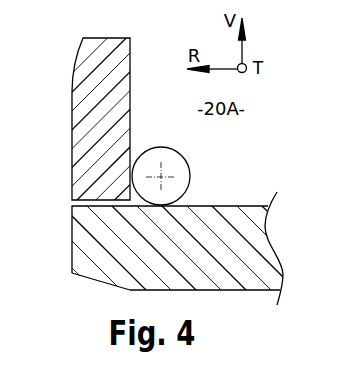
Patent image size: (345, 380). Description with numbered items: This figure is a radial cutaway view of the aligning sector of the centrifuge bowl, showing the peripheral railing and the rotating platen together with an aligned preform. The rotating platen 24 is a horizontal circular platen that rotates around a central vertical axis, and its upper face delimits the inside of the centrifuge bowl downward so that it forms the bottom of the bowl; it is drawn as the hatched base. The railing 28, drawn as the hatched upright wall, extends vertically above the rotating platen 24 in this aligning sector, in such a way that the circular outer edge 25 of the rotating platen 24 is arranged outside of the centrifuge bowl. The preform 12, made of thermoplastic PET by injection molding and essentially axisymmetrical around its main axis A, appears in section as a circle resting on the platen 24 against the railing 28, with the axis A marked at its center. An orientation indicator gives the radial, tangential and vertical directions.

The lateral wall 28 is at (97, 90).
The support base 24 is at (223, 218).
The chamfered lower edge 25 is at (72, 253).
The elongated member / wire 12 is at (178, 184).
The central axis A is at (167, 173).